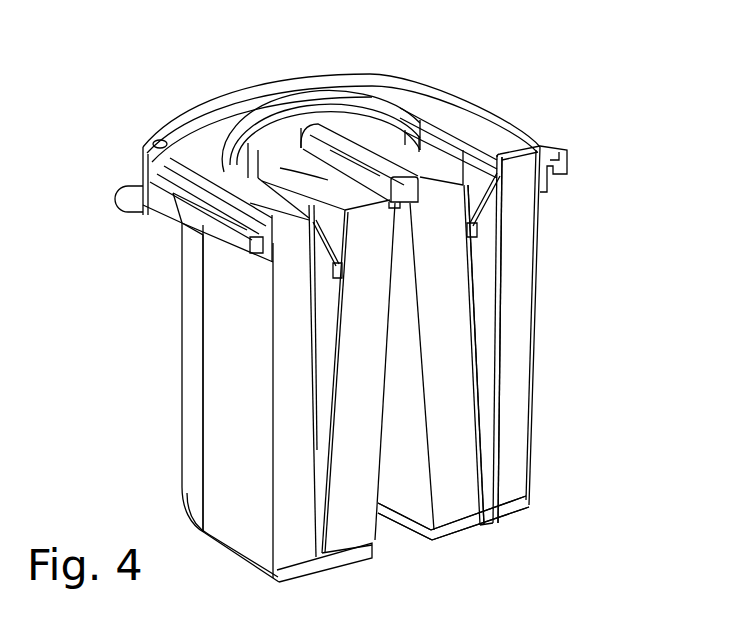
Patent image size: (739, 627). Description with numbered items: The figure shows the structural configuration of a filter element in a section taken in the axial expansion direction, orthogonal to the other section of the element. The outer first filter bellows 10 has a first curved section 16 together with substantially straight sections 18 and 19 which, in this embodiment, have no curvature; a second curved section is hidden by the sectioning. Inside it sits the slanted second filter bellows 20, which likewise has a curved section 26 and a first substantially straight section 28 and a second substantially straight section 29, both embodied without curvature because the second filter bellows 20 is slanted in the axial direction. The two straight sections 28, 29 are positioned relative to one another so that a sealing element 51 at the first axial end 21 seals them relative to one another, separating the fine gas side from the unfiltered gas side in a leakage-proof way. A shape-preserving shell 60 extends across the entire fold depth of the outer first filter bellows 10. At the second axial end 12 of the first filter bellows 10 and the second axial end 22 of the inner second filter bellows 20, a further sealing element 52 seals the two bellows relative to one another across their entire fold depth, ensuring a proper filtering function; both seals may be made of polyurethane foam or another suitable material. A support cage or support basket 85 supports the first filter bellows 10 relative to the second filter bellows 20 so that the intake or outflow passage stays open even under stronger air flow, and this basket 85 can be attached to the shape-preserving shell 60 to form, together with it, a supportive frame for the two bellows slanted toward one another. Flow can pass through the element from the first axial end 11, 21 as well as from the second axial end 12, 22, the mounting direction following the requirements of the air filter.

The first filter bellows 10 is at (528, 313).
The first axial end 11 is at (527, 173).
The second axial end 12 is at (517, 490).
The first curved section 16 is at (214, 380).
The substantially straight section 18 is at (487, 263).
The substantially straight section 19 is at (240, 417).
The second filter bellows 20 is at (463, 455).
The first axial end 21 is at (478, 172).
The second axial end 22 is at (445, 510).
The curved section 26 is at (283, 137).
The first substantially straight section 28 is at (385, 152).
The second substantially straight section 29 is at (182, 218).
The sealing element 51 is at (323, 135).
The sealing element 52 is at (487, 527).
The shape-preserving shell 60 is at (503, 140).
The support basket 85 is at (482, 200).